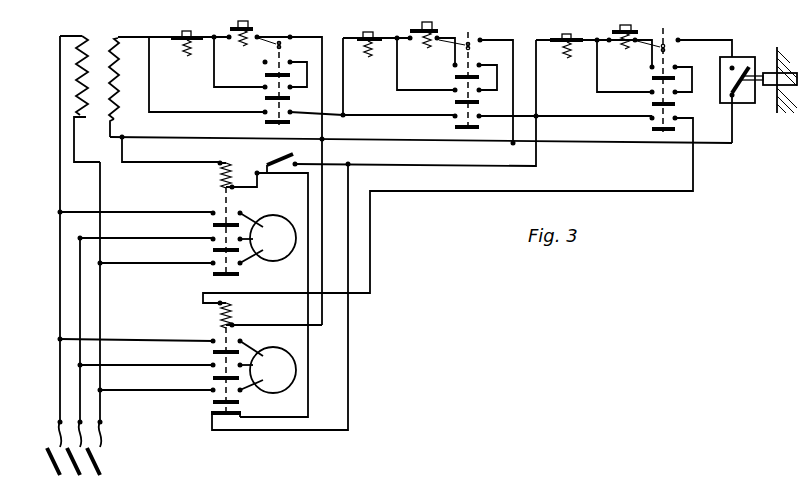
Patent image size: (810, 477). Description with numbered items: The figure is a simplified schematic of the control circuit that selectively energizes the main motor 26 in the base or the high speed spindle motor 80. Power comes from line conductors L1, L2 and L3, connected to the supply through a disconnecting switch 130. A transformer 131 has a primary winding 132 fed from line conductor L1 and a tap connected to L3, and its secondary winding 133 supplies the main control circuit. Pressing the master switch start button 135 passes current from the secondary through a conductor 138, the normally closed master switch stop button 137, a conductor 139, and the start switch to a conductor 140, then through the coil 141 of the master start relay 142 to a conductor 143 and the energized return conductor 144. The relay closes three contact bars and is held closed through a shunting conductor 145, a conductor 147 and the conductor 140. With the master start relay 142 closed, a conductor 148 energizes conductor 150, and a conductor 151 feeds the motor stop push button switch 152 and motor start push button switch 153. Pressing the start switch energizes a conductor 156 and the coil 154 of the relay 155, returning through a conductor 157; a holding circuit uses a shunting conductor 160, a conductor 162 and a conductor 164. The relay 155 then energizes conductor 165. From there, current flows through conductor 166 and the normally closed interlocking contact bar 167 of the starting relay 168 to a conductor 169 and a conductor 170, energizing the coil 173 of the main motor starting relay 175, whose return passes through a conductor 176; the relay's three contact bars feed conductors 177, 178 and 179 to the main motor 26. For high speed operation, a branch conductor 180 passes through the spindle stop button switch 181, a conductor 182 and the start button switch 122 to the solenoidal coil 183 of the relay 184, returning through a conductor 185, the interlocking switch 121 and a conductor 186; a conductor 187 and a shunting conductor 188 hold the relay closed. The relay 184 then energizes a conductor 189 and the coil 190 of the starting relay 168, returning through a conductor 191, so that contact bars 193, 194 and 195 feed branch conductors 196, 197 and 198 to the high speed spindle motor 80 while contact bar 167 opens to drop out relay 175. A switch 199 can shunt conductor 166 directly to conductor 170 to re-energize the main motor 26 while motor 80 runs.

The line conductor L1 is at (58, 398).
The line conductor L2 is at (81, 404).
The line conductor L3 is at (101, 425).
The disconnecting switch 130 is at (101, 452).
The transformer 131 is at (95, 34).
The primary winding 132 is at (80, 120).
The secondary winding 133 is at (118, 38).
The conductor 138 is at (136, 36).
The master switch stop button 137 is at (183, 45).
The conductor 139 is at (214, 60).
The master switch start button 135 is at (231, 29).
The coil 141 is at (279, 41).
The conductor 140 is at (245, 48).
The master start relay 142 is at (263, 75).
The shunting conductor 145 is at (246, 92).
The conductor 147 is at (314, 52).
The conductor 143 is at (322, 100).
The conductor 148 is at (149, 112).
The energized conductor 144 is at (192, 138).
The motor stop push button switch 152 is at (360, 34).
The shunting conductor 160 is at (397, 76).
The conductor 151 is at (344, 100).
The conductor 150 is at (343, 116).
The motor start push button switch 153 is at (418, 26).
The conductor 164 is at (433, 58).
The conductor 156 is at (468, 38).
The relay 155 is at (452, 77).
The conductor 165 is at (509, 114).
The conductor 157 is at (503, 52).
The conductor 162 is at (497, 88).
The coil 154 is at (513, 40).
The branch conductor 180 is at (537, 77).
The conductor 166 is at (537, 163).
The spindle stop button switch 181 is at (567, 38).
The shunting conductor 188 is at (613, 93).
The conductor 182 is at (620, 30).
The relay 184 is at (651, 78).
The start button switch 122 is at (661, 30).
The conductor 187 is at (687, 52).
The solenoidal coil 183 is at (680, 41).
The conductor 185 is at (740, 57).
The interlocking switch 121 is at (721, 100).
The conductor 186 is at (735, 143).
The conductor 189 is at (694, 164).
The switch 199 is at (267, 159).
The conductor 170 is at (257, 182).
The coil 173 is at (220, 169).
The conductor 176 is at (126, 162).
The main motor starting relay 175 is at (210, 274).
The conductor 177 is at (251, 219).
The conductor 178 is at (255, 244).
The conductor 179 is at (244, 263).
The main motor 26 is at (294, 236).
The starting relay 168 is at (215, 318).
The coil 190 is at (227, 312).
The conductor 191 is at (283, 325).
The contact bar 193 is at (224, 335).
The branch conductor 196 is at (262, 340).
The branch conductor 197 is at (255, 374).
The branch conductor 198 is at (245, 390).
The high speed spindle motor 80 is at (294, 368).
The contact bar 194 is at (213, 379).
The contact bar 195 is at (213, 403).
The interlocking contact bar 167 is at (210, 414).
The conductor 169 is at (308, 340).